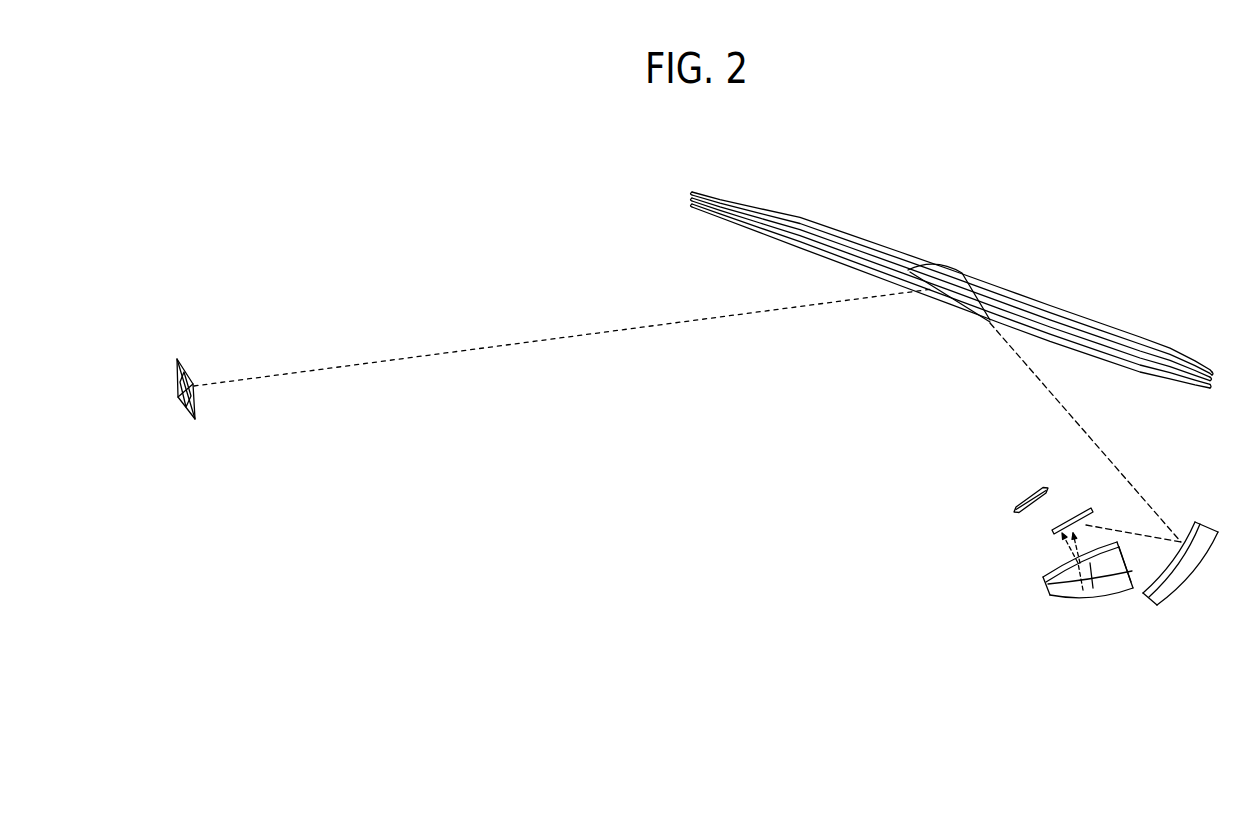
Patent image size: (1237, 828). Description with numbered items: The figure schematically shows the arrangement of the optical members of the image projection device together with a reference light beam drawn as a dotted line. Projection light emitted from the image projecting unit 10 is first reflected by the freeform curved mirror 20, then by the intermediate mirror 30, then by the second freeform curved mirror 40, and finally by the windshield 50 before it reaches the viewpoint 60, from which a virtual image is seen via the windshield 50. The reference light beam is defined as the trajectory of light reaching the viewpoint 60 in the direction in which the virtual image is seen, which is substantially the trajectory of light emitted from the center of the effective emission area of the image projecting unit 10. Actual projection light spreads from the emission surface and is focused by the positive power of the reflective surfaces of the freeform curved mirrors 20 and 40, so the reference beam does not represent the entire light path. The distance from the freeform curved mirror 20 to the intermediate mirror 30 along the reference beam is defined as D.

The image projecting unit 10 is at (1022, 500).
The freeform curved mirror 20 is at (1110, 597).
The intermediate mirror 30 is at (1080, 511).
The freeform curved mirror 40 is at (1215, 522).
The windshield 50 is at (1005, 288).
The viewpoint 60 is at (190, 414).